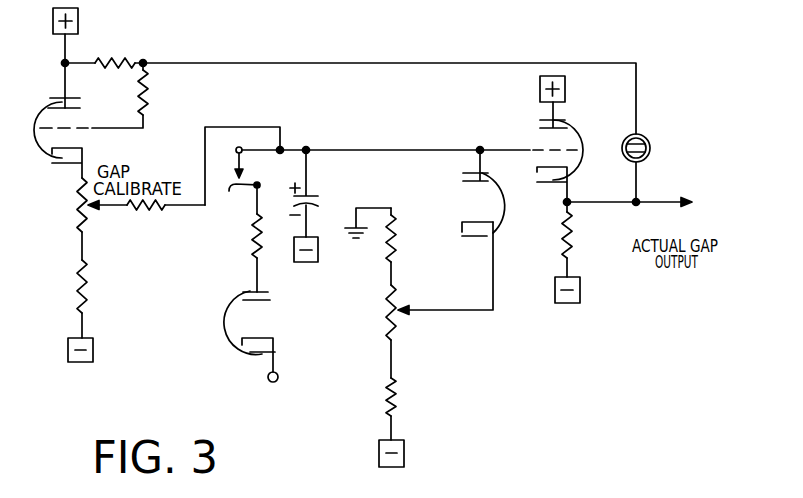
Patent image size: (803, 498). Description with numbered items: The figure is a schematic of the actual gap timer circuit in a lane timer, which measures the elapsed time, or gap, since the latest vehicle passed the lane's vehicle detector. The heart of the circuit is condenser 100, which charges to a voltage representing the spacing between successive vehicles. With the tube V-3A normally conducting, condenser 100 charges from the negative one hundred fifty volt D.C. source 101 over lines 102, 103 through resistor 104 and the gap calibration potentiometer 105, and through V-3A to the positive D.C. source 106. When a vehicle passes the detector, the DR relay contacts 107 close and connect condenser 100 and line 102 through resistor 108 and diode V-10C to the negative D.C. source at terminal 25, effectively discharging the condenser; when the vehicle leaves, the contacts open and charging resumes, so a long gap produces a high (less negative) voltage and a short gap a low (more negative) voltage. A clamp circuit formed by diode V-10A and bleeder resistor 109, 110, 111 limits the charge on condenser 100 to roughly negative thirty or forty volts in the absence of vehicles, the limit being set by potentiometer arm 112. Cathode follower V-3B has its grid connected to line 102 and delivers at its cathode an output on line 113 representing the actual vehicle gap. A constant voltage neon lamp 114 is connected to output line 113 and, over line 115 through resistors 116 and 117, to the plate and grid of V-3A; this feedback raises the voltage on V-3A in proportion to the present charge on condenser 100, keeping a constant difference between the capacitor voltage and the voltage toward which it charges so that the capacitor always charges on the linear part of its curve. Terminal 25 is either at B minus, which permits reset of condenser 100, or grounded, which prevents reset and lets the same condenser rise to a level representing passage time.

The terminal 25 is at (268, 377).
The condenser 100 is at (318, 203).
The negative D.C. source 101 is at (93, 350).
The line 102 is at (292, 148).
The line 103 is at (250, 127).
The resistor 104 is at (146, 210).
The gap calibration potentiometer 105 is at (76, 204).
The positive D.C. source 106 is at (78, 20).
The DR relay contacts 107 is at (244, 181).
The resistor 108 is at (252, 238).
The bleeder resistor 109 is at (397, 240).
The bleeder resistor 110 is at (396, 290).
The bleeder resistor 111 is at (400, 396).
The potentiometer arm 112 is at (428, 312).
The output line 113 is at (670, 205).
The constant voltage neon lamp 114 is at (650, 148).
The line 115 is at (371, 63).
The resistor 116 is at (111, 62).
The resistor 117 is at (148, 97).
The tube V-3A is at (53, 98).
The cathode follower V-3B is at (570, 123).
The diode V-10A is at (495, 228).
The diode V-10C is at (236, 295).